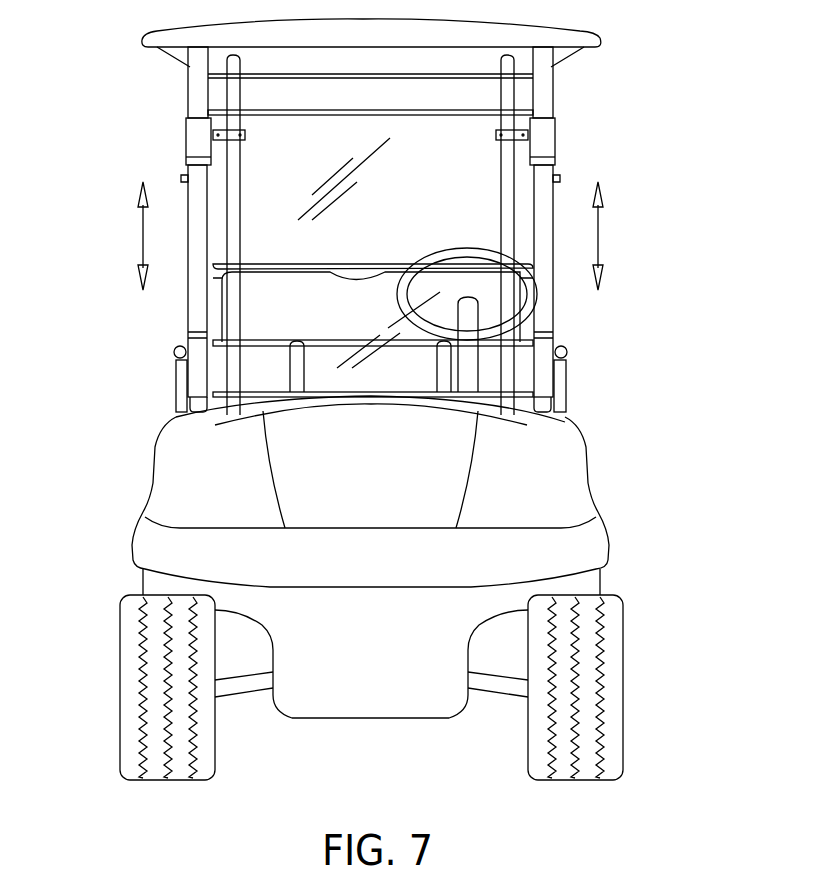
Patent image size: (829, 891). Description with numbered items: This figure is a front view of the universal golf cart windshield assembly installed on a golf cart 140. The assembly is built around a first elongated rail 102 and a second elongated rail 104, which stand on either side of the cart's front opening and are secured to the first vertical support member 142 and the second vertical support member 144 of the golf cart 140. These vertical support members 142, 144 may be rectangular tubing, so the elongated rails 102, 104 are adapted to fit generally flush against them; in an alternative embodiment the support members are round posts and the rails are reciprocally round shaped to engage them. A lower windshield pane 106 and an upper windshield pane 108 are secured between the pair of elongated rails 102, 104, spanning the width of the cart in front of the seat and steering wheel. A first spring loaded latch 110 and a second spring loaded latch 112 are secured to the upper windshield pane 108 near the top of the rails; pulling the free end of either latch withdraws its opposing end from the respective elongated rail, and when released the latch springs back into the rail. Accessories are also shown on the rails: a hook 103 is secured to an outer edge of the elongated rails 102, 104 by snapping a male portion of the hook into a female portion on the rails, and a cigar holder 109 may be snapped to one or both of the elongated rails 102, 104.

The first elongated rail 102 is at (193, 302).
The hook 103 is at (183, 178).
The second elongated rail 104 is at (548, 303).
The lower windshield pane 106 is at (510, 383).
The upper windshield pane 108 is at (328, 138).
The cigar holder 109 is at (176, 354).
The first spring loaded latch 110 is at (190, 125).
The second spring loaded latch 112 is at (535, 130).
The golf cart 140 is at (603, 553).
The first vertical support member 142 is at (193, 85).
The second vertical support member 144 is at (543, 85).